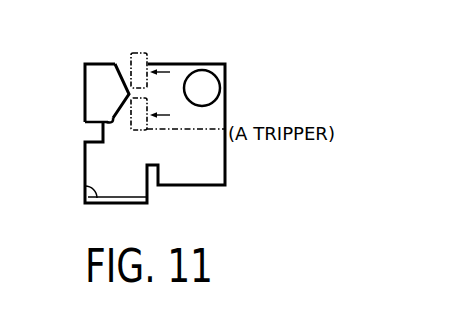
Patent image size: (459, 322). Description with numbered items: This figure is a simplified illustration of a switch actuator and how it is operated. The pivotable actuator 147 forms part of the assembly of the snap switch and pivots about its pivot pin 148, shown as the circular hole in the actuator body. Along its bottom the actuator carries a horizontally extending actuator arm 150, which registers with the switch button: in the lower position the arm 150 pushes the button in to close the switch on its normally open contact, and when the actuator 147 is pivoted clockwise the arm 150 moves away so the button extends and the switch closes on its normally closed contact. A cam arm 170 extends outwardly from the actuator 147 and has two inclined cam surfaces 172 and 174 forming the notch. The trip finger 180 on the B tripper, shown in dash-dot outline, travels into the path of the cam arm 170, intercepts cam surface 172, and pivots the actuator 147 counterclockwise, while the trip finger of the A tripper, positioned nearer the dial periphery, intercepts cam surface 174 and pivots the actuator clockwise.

The pivotable actuator 147 is at (210, 179).
The pivot pin 148 is at (208, 95).
The actuator arm 150 is at (86, 188).
The cam arm 170 is at (88, 91).
The cam surface 172 is at (130, 62).
The cam surface 174 is at (112, 122).
The trip finger 180 is at (149, 53).